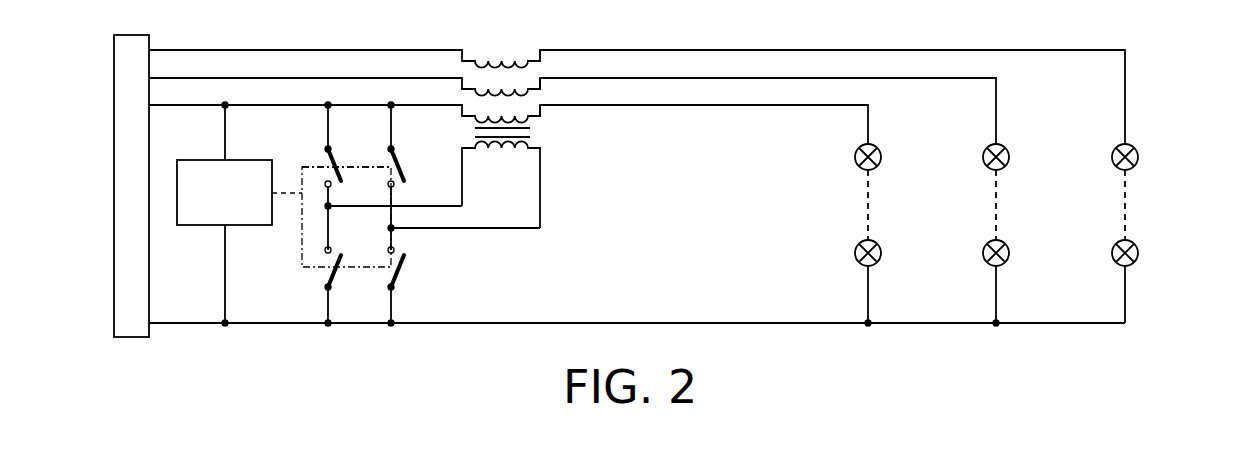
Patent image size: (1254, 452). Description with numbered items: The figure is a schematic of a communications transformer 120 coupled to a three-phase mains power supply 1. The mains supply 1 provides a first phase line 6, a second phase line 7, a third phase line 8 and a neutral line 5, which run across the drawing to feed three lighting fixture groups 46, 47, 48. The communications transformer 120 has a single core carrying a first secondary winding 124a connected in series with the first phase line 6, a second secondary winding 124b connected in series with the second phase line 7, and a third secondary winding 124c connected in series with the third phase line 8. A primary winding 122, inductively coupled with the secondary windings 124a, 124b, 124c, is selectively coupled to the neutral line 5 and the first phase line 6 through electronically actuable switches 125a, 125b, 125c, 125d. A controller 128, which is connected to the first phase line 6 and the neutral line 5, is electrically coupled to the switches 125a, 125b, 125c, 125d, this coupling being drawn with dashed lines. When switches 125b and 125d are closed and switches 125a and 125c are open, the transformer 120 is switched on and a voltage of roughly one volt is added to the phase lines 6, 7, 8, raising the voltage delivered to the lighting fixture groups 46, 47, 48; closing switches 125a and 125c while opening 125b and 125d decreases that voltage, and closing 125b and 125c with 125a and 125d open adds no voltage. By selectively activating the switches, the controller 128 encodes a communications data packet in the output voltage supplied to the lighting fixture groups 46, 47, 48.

The three-phase mains power supply 1 is at (114, 188).
The neutral line 5 is at (750, 322).
The first phase line 6 is at (712, 107).
The second phase line 7 is at (750, 80).
The third phase line 8 is at (790, 52).
The lighting fixture group 46 is at (893, 163).
The lighting fixture group 47 is at (1021, 163).
The lighting fixture group 48 is at (1150, 163).
The communications transformer 120 is at (585, 216).
The primary winding 122 is at (540, 164).
The first secondary winding 124a is at (535, 113).
The second secondary winding 124b is at (535, 85).
The third secondary winding 124c is at (535, 57).
The switch 125a is at (405, 173).
The switch 125b is at (405, 264).
The switch 125c is at (323, 270).
The switch 125d is at (323, 162).
The controller 128 is at (203, 226).